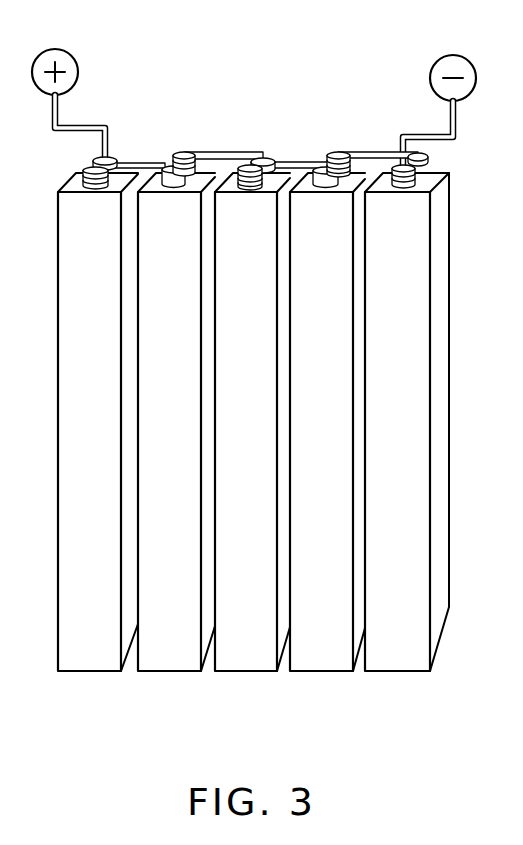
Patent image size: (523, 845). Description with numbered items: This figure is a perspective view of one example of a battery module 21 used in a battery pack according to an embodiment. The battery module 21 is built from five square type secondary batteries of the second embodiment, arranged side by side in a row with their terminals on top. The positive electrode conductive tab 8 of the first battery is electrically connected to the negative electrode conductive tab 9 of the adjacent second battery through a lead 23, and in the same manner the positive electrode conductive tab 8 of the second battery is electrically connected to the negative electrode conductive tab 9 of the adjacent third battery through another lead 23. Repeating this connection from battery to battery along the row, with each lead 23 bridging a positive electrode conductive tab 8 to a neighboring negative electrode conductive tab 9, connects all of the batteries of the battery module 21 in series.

The battery module 21 is at (258, 376).
The lead 23 is at (228, 152).
The positive electrode conductive tab 8 is at (330, 156).
The negative electrode conductive tab 9 is at (336, 152).